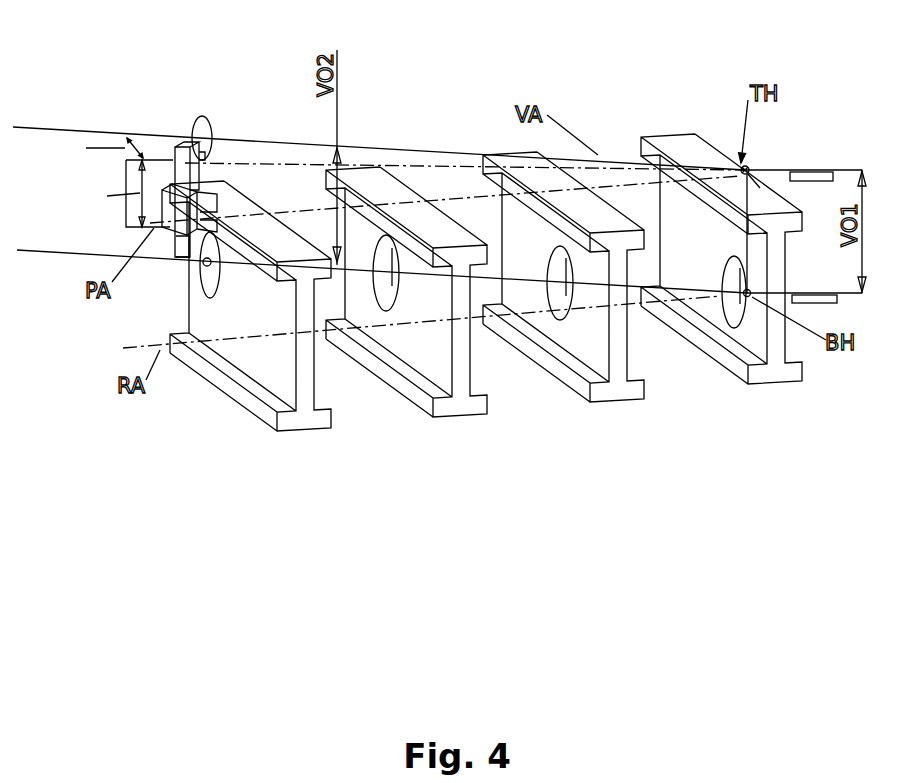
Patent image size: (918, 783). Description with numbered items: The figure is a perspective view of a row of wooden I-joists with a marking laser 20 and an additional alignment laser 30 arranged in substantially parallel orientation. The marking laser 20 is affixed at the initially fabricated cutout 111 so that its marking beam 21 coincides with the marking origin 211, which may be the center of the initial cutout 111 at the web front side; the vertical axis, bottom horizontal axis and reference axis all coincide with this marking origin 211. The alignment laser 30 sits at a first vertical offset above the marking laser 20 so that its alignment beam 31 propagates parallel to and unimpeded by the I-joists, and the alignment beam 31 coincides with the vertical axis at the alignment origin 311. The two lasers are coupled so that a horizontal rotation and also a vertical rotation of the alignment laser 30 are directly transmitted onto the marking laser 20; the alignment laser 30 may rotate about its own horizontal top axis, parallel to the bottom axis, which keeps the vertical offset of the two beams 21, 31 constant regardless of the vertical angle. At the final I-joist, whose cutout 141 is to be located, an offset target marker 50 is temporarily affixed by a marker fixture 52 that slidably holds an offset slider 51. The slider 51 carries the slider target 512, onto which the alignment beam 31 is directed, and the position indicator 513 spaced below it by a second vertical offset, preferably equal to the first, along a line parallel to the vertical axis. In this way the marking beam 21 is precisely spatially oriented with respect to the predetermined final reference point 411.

The offset target marker 50 is at (143, 124).
The offset slider 51 is at (183, 143).
The marker fixture 52 is at (210, 190).
The slider target 512 is at (208, 120).
The position indicator 513 is at (207, 260).
The alignment beam 31 is at (380, 148).
The alignment origin 311 is at (749, 168).
The alignment laser 30 is at (810, 172).
The marking beam 21 is at (43, 253).
The predetermined final reference point 411 is at (203, 263).
The cutout 141 is at (213, 300).
The marking origin 211 is at (745, 295).
The initial cutout 111 is at (741, 328).
The marking laser 20 is at (832, 302).